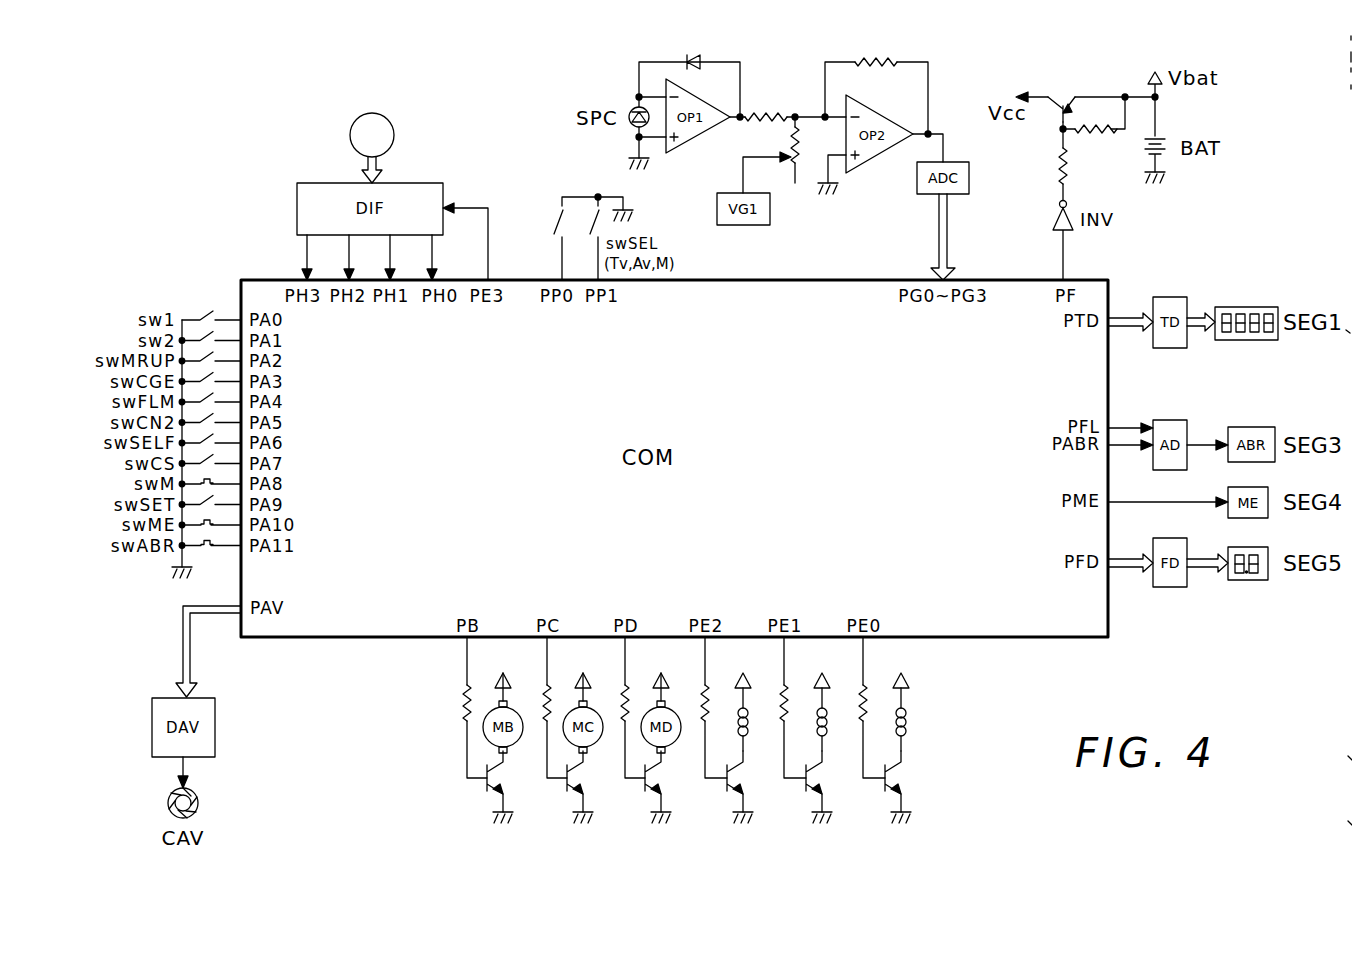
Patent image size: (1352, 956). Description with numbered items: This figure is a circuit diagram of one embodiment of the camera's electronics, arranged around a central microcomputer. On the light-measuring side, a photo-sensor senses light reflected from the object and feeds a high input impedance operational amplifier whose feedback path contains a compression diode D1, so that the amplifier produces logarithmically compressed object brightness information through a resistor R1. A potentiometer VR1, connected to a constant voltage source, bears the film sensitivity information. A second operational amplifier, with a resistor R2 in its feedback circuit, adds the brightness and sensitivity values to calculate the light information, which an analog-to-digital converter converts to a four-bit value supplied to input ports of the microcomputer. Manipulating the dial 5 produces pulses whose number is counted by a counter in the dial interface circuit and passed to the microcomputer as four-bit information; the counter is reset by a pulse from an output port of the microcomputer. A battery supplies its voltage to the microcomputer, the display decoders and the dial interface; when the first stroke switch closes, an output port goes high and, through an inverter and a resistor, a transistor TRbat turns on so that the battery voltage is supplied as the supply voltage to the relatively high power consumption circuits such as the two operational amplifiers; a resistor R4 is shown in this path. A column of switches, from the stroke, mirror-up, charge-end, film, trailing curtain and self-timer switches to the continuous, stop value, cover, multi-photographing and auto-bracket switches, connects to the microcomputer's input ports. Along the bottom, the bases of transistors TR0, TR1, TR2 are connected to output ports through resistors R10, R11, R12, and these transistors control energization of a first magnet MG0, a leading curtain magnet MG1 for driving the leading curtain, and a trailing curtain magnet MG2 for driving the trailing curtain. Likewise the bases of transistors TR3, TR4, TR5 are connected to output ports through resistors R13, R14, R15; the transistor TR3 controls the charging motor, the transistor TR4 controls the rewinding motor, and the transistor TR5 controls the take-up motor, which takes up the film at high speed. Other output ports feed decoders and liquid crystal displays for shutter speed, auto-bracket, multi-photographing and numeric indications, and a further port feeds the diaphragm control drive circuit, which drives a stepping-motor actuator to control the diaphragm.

The dial 5 is at (394, 134).
The compression diode D1 is at (697, 68).
The resistor R1 is at (766, 105).
The potentiometer VR1 is at (771, 155).
The resistor R2 is at (866, 67).
The resistor R4 is at (1080, 166).
The transistor TRbat is at (1059, 95).
The resistor R15 is at (477, 697).
The resistor R14 is at (557, 697).
The resistor R13 is at (635, 697).
The resistor R12 is at (715, 697).
The resistor R11 is at (794, 697).
The resistor R10 is at (873, 697).
The transistor TR5 is at (495, 796).
The transistor TR4 is at (575, 796).
The transistor TR3 is at (653, 796).
The transistor TR2 is at (735, 796).
The transistor TR1 is at (814, 796).
The transistor TR0 is at (893, 796).
The trailing curtain magnet MG2 is at (749, 735).
The leading curtain magnet MG1 is at (828, 735).
The first magnet MG0 is at (907, 735).